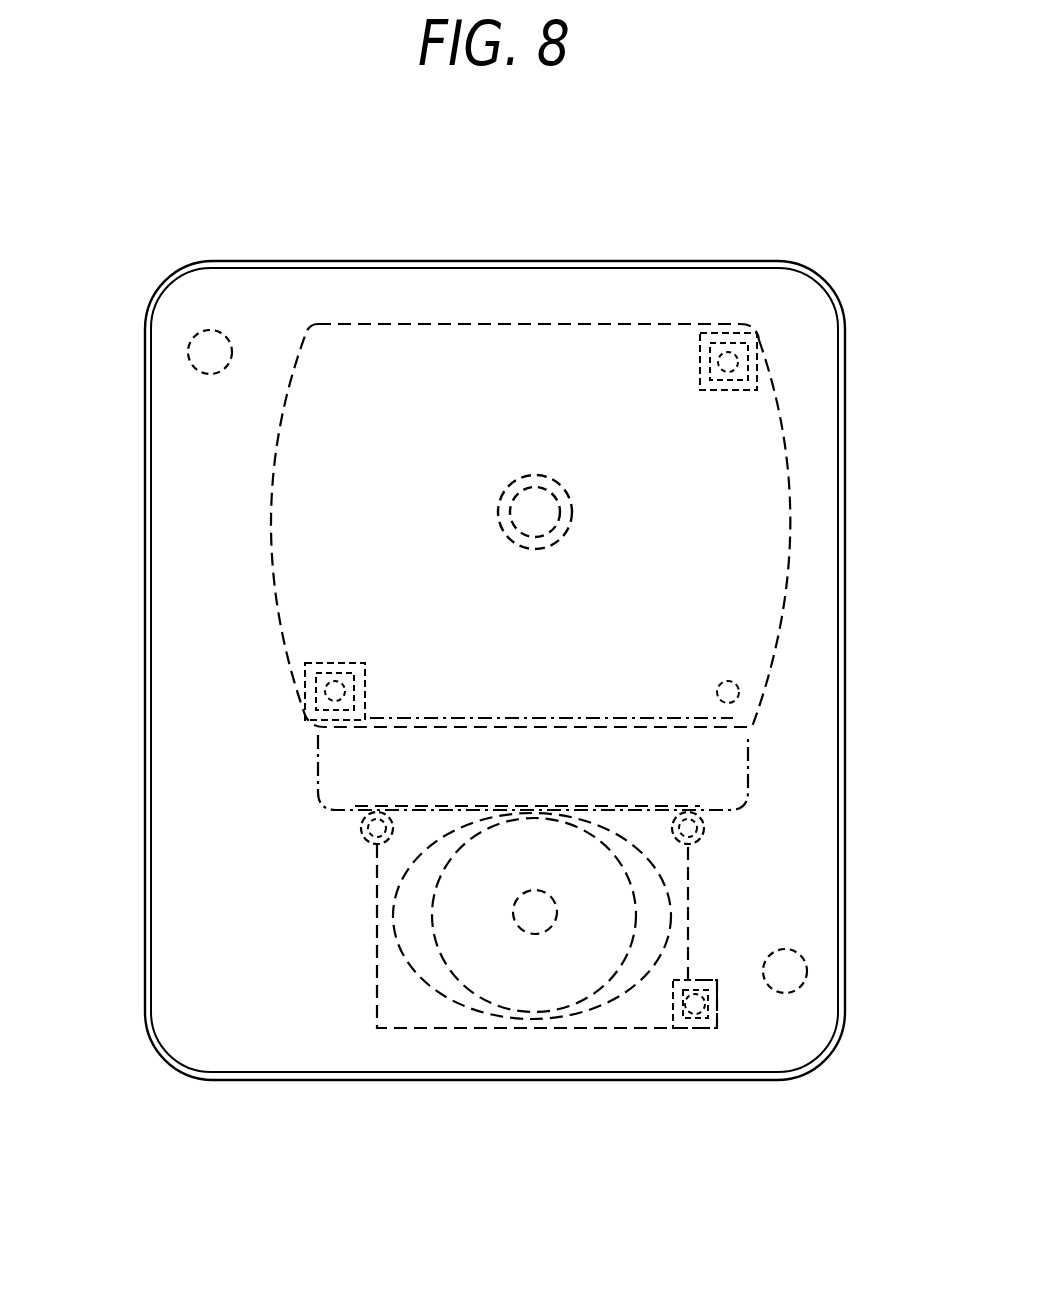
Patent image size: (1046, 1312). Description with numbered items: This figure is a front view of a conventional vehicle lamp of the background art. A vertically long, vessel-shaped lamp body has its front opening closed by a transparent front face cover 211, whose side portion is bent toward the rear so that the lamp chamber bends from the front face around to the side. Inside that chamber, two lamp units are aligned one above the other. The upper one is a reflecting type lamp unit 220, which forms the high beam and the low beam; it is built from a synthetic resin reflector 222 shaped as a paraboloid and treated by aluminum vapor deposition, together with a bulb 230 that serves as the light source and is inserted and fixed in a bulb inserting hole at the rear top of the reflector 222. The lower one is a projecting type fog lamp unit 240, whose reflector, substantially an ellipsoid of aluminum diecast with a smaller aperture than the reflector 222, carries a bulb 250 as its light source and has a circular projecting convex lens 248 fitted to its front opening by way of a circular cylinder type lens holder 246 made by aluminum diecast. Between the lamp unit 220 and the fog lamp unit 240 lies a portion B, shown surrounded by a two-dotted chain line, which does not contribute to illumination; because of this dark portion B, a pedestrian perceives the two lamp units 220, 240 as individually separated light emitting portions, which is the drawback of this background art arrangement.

The transparent front face cover 211 is at (230, 642).
The reflecting type lamp unit 220 is at (498, 506).
The reflector 222 is at (795, 604).
The bulb 230 is at (533, 460).
The portion B is at (750, 764).
The projecting type fog lamp unit 240 is at (644, 988).
The lens holder 246 is at (418, 1028).
The projecting convex lens 248 is at (503, 978).
The bulb 250 is at (553, 927).